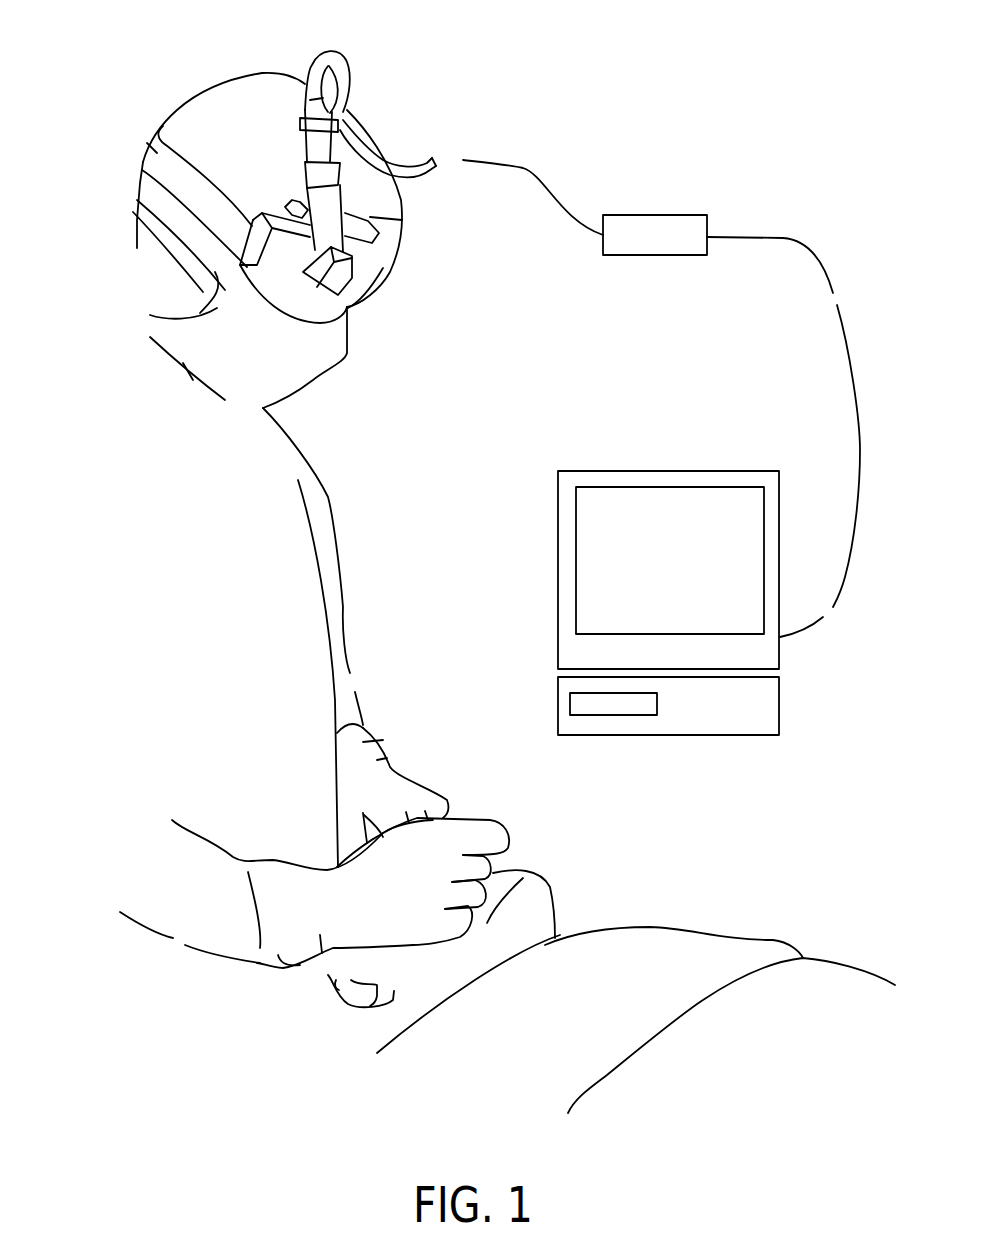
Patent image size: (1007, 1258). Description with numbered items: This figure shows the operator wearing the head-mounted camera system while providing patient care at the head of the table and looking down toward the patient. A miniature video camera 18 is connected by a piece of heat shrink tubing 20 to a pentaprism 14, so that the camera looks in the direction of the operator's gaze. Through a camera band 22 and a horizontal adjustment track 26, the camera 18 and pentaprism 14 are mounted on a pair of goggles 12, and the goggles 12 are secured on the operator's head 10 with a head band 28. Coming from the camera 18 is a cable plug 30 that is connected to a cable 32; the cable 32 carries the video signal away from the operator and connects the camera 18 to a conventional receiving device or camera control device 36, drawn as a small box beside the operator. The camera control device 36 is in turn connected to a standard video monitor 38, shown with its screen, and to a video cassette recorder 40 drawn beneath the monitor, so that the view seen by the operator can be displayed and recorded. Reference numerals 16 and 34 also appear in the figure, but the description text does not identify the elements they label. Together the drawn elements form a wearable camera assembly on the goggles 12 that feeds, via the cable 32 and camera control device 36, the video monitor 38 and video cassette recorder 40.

The operator's head 10 is at (215, 140).
The goggles 12 is at (363, 322).
The pentaprism 14 is at (312, 270).
The head mounted assembly 16 is at (381, 267).
The miniature video camera 18 is at (323, 235).
The heat shrink tubing 20 is at (308, 168).
The camera band 22 is at (343, 189).
The horizontal adjustment track 26 is at (352, 244).
The head band 28 is at (157, 153).
The cable plug 30 is at (320, 146).
The cable 32 is at (349, 68).
The clamp and cable 34 is at (340, 120).
The camera control device 36 is at (653, 220).
The video monitor 38 is at (603, 545).
The video cassette recorder 40 is at (565, 687).